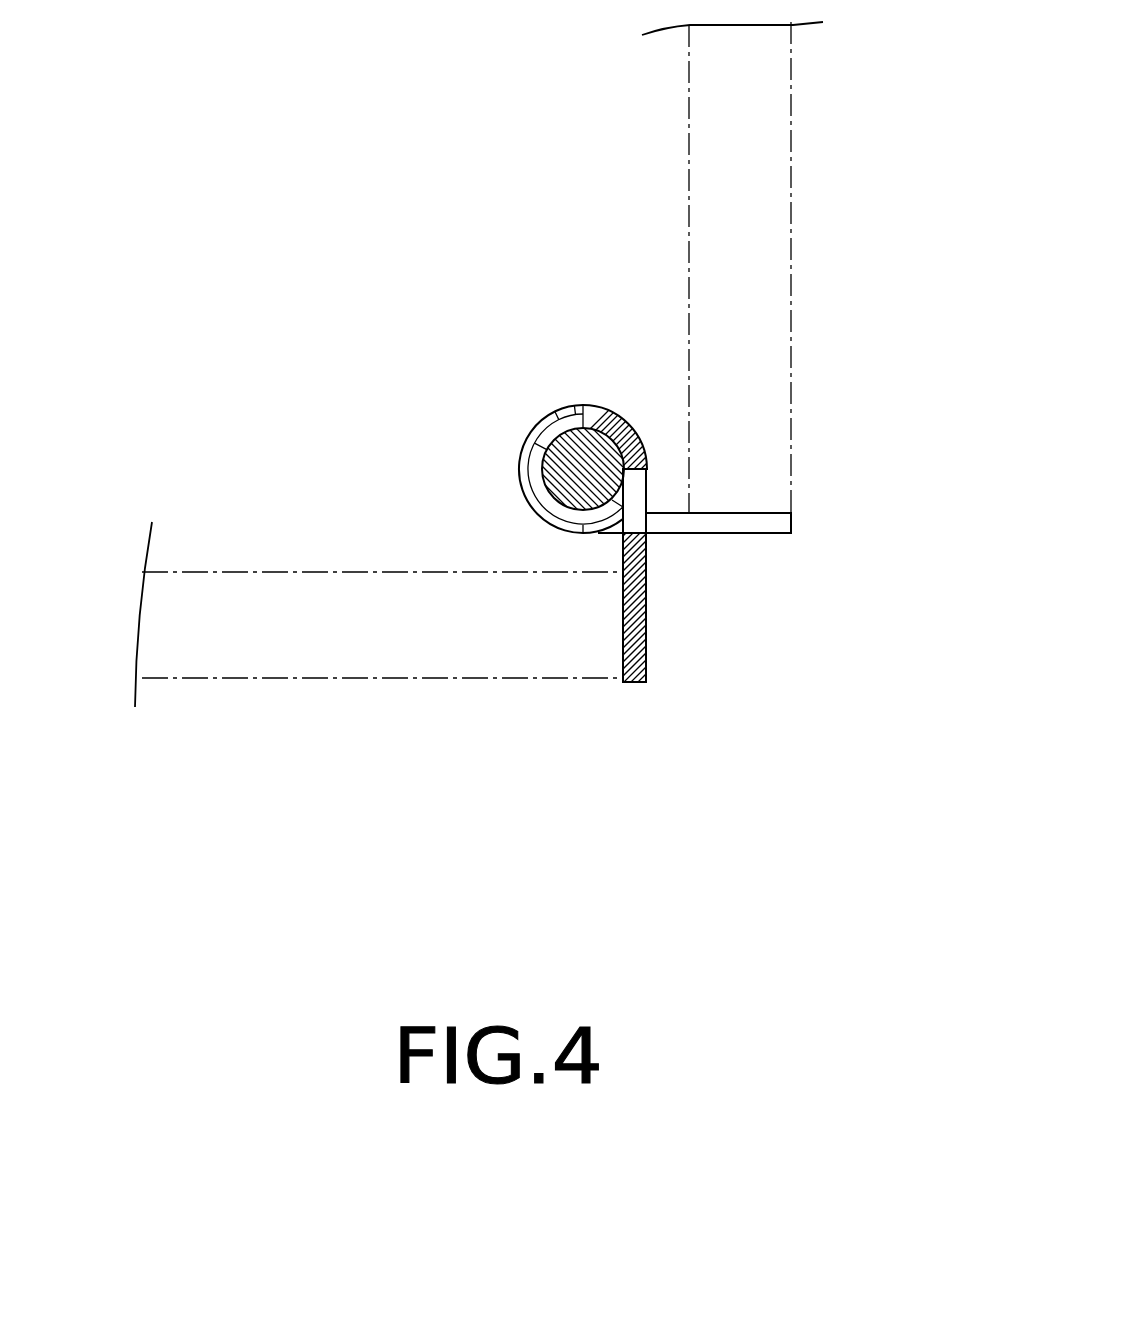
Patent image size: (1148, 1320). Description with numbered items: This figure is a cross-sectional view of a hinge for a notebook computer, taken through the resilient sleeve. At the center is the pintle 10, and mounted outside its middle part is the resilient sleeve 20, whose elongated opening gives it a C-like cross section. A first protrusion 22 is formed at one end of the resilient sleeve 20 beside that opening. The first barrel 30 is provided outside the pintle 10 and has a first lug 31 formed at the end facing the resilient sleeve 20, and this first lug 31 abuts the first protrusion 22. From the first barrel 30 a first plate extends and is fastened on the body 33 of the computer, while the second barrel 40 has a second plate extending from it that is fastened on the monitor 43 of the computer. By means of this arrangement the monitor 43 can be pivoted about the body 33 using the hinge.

The pintle 10 is at (567, 441).
The resilient sleeve 20 is at (513, 462).
The first protrusion 22 is at (580, 406).
The first barrel 30 is at (669, 668).
The first lug 31 is at (620, 411).
The body 33 is at (402, 676).
The second barrel 40 is at (802, 553).
The monitor 43 is at (788, 335).